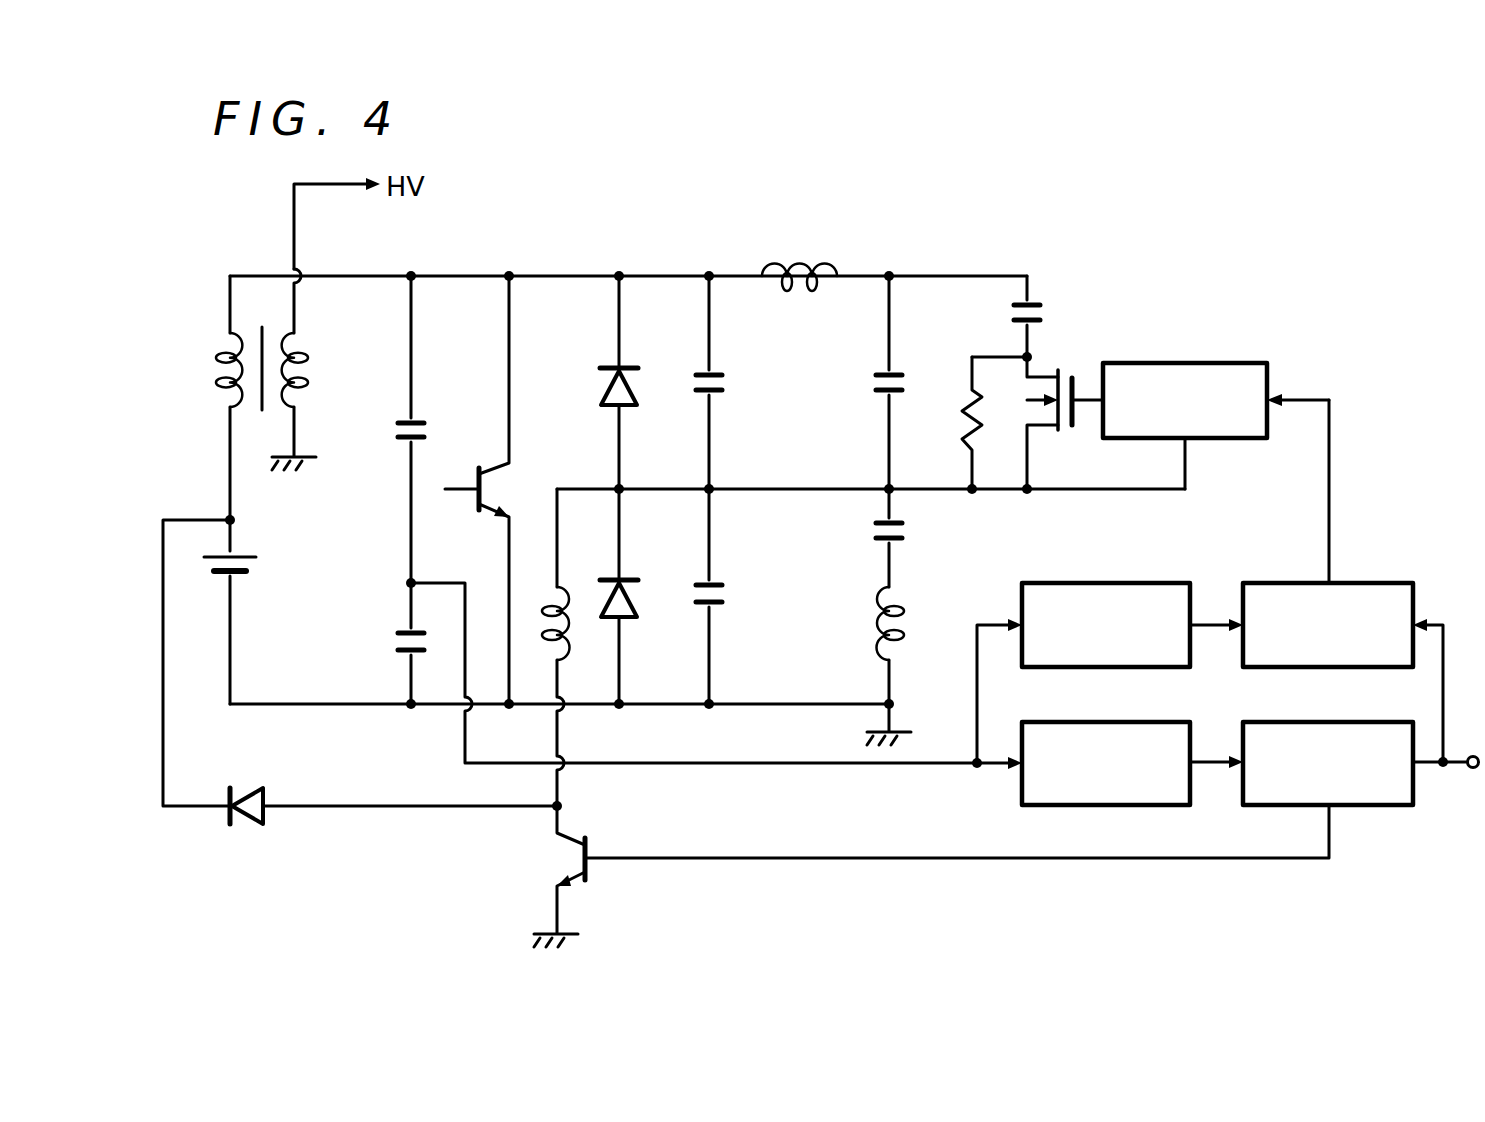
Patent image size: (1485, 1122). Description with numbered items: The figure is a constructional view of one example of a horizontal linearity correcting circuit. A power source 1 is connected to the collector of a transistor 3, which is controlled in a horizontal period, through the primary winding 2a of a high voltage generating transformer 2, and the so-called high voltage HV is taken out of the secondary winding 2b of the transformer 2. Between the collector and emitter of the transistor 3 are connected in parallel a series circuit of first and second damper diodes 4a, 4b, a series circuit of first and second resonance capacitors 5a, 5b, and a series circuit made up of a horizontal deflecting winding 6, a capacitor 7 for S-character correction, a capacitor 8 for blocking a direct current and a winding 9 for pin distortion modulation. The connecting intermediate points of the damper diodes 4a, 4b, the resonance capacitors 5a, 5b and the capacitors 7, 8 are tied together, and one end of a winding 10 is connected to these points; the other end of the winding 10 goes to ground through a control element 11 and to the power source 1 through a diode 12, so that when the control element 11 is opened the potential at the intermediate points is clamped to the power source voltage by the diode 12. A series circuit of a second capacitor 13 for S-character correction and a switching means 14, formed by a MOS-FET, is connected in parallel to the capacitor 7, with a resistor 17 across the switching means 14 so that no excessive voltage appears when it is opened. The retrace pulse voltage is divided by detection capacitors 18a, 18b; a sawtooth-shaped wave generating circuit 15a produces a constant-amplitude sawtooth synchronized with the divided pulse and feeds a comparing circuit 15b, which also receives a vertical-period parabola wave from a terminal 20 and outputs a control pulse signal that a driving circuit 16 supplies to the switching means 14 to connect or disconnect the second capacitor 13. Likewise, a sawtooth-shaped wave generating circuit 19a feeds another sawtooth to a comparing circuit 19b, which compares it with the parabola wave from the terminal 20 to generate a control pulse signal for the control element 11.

The power source 1 is at (256, 562).
The high voltage generating transformer 2 is at (260, 420).
The primary winding 2a is at (222, 358).
The secondary winding 2b is at (304, 358).
The transistor 3 is at (500, 485).
The first damper diode 4a is at (634, 397).
The second damper diode 4b is at (637, 598).
The first resonance capacitor 5a is at (725, 383).
The second resonance capacitor 5b is at (728, 599).
The horizontal deflecting winding 6 is at (783, 262).
The capacitor for S-character correction 7 is at (873, 381).
The capacitor for blocking a direct current 8 is at (906, 527).
The winding for pin distortion modulation 9 is at (875, 638).
The winding 10 is at (548, 596).
The control element 11 is at (571, 856).
The diode 12 is at (248, 790).
The second capacitor for S-character correction 13 is at (1047, 305).
The switching means 14 is at (1048, 372).
The sawtooth-shaped wave generating circuit 15a is at (1143, 583).
The comparing circuit 15b is at (1385, 583).
The driving circuit 16 is at (1240, 440).
The resistor 17 is at (962, 429).
The capacitor for detection 18a is at (426, 432).
The capacitor for detection 18b is at (388, 645).
The sawtooth-shaped wave generating circuit 19a is at (1143, 722).
The comparing circuit 19b is at (1385, 722).
The terminal 20 is at (1472, 754).